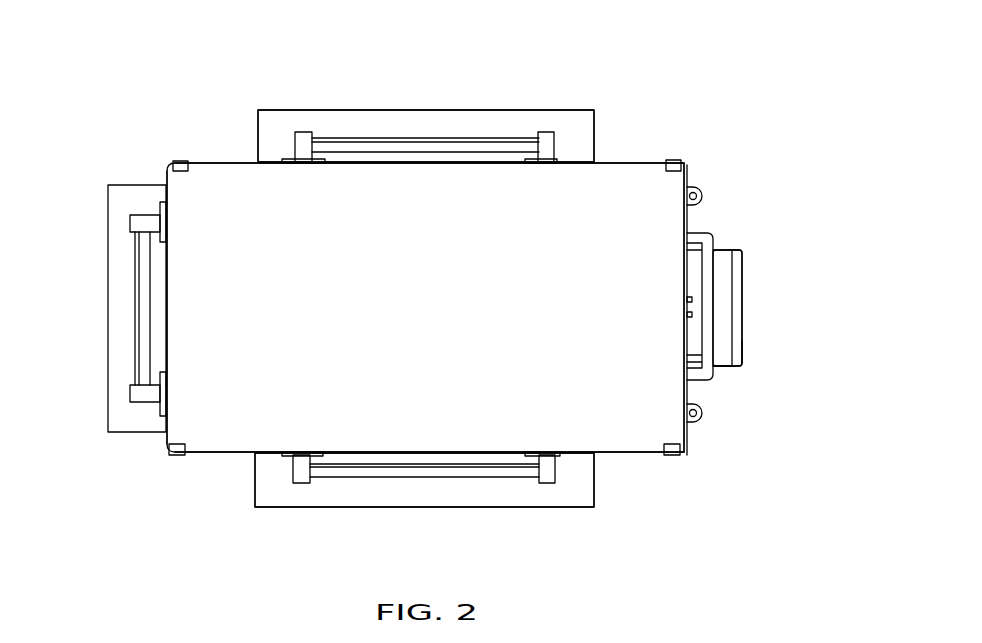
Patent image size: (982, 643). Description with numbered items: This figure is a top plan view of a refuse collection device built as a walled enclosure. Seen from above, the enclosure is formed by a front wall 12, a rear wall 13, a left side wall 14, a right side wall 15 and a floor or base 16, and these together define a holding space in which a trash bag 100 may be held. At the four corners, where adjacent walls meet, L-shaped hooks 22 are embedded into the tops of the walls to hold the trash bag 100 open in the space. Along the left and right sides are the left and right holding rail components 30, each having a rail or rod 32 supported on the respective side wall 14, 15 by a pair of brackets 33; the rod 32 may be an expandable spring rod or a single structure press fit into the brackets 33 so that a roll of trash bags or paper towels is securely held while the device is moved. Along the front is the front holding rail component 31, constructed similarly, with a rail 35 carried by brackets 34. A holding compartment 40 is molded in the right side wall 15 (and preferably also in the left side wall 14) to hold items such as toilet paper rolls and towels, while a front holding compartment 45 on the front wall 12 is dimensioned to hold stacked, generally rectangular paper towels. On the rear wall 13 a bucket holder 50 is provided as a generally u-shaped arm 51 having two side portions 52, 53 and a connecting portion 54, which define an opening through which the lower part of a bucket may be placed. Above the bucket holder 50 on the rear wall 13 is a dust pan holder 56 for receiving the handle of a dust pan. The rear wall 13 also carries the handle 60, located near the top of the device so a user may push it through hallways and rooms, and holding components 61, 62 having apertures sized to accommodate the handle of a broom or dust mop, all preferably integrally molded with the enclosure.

The trash bag 100 is at (190, 160).
The front wall 12 is at (620, 452).
The rear wall 13 is at (610, 163).
The left side wall 14 is at (157, 442).
The right side wall 15 is at (689, 178).
The floor or base 16 is at (570, 263).
The hooks 22 is at (173, 163).
The left and right holding rail components 30 is at (472, 132).
The front holding rail component 31 is at (128, 318).
The rail or rod 32 is at (503, 140).
The brackets 33 is at (297, 152).
The brackets 34 is at (160, 212).
The rail 35 is at (135, 270).
The holding compartment 40 is at (383, 118).
The front holding compartment 45 is at (110, 215).
The bucket holder 50 is at (752, 318).
The u-shaped arm 51 is at (738, 343).
The side portion 52 is at (733, 367).
The side portion 53 is at (732, 253).
The connecting portion 54 is at (737, 283).
The dust pan holder 56 is at (690, 297).
The handle 60 is at (718, 232).
The holding component 61 is at (700, 188).
The holding component 62 is at (698, 422).